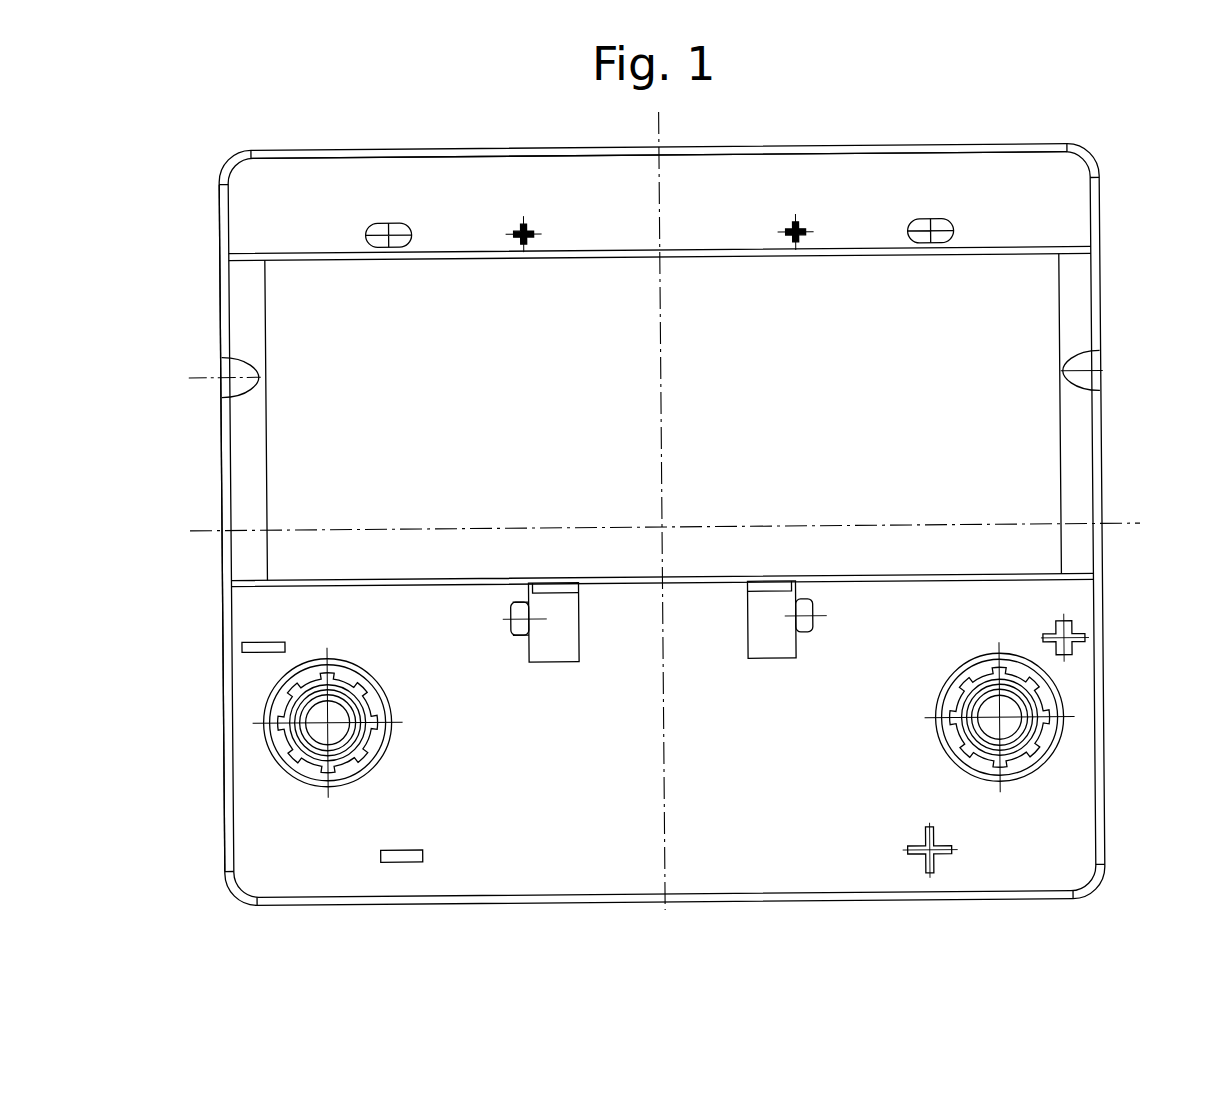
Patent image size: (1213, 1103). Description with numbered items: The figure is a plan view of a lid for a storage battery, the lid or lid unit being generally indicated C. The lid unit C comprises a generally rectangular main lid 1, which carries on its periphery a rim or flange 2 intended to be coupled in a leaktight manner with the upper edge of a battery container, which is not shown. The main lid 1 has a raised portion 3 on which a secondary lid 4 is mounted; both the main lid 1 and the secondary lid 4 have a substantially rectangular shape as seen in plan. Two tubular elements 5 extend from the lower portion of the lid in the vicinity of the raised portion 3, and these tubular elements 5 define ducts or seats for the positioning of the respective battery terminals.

The main lid 1 is at (1028, 141).
The rim or flange 2 is at (425, 148).
The lid unit C is at (828, 134).
The raised portion 3 is at (221, 309).
The secondary lid 4 is at (1055, 248).
The tubular elements 5 is at (291, 748).